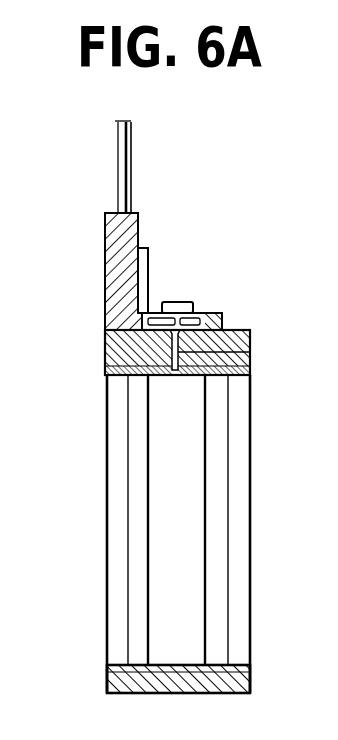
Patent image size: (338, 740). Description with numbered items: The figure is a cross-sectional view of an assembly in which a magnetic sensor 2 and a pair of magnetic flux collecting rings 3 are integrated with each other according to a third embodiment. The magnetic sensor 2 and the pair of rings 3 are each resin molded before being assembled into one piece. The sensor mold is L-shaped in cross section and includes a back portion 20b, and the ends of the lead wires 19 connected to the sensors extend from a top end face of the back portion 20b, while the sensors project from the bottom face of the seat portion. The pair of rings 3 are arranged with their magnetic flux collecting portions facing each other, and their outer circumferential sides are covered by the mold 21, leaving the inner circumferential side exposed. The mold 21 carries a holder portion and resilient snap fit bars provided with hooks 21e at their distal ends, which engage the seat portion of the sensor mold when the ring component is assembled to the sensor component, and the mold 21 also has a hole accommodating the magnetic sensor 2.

The lead wire 19 is at (131, 173).
The back portion 20b is at (105, 242).
The hook 21e is at (178, 300).
The mold 21 is at (105, 352).
The magnetic sensor 2 is at (251, 353).
The magnetic flux collecting ring 3 is at (212, 577).